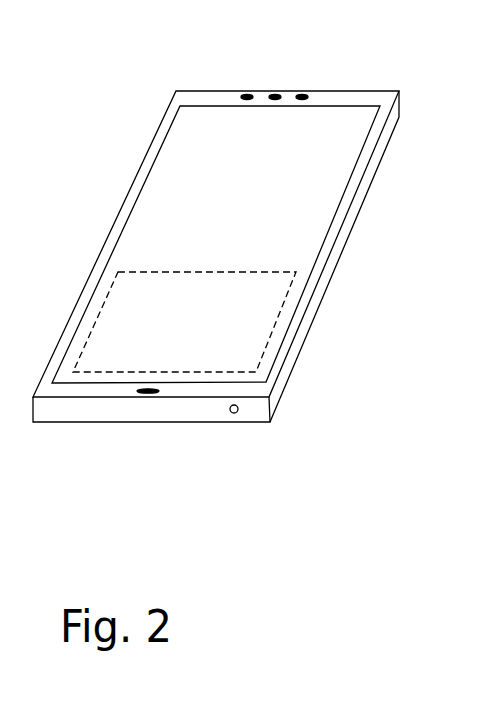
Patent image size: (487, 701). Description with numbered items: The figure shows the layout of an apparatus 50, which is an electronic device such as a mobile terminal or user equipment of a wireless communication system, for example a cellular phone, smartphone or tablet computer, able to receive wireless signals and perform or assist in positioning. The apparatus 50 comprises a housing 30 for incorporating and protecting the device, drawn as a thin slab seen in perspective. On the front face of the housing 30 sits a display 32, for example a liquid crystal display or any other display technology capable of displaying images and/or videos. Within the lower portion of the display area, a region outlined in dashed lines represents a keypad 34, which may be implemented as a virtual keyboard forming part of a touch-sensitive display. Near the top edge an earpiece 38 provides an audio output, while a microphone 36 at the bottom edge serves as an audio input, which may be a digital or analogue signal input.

The housing 30 is at (190, 91).
The display 32 is at (320, 192).
The keypad 34 is at (260, 337).
The microphone 36 is at (152, 396).
The earpiece 38 is at (274, 94).
The apparatus 50 is at (258, 247).